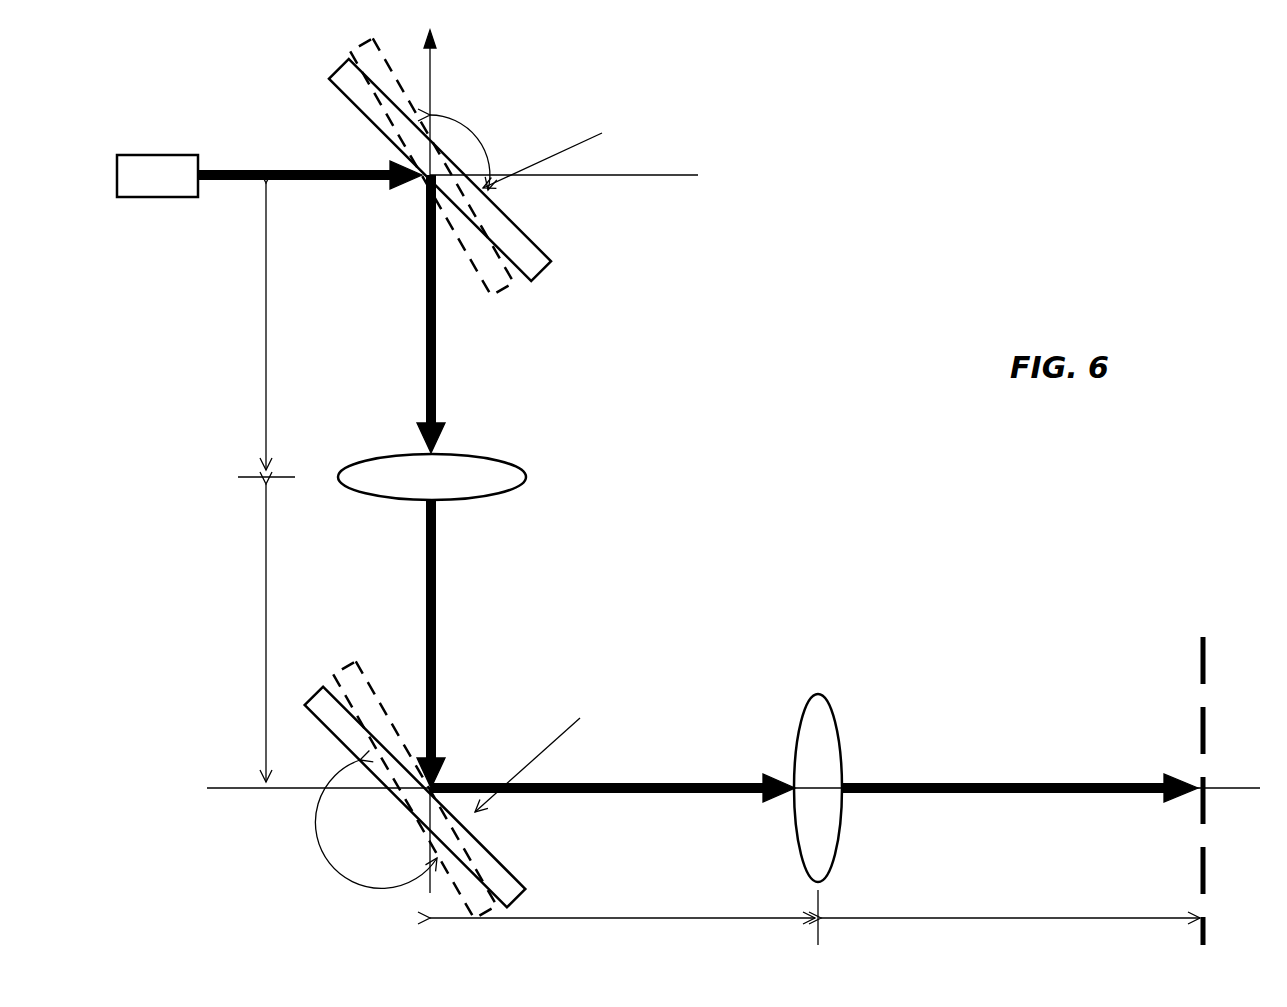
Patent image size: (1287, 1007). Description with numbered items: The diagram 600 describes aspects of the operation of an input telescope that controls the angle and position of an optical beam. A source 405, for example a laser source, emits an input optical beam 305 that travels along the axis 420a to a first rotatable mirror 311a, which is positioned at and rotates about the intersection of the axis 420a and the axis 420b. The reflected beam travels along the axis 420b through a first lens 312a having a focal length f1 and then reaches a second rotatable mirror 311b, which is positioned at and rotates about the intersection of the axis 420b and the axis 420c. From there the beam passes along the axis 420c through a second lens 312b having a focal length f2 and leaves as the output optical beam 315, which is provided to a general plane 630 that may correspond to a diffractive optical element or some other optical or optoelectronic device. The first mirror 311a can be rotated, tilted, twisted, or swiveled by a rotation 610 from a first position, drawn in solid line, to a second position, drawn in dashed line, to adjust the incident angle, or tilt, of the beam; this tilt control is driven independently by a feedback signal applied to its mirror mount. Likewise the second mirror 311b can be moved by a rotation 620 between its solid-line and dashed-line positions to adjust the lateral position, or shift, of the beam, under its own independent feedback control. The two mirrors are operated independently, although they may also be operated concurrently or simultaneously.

The diagram 600 is at (1160, 108).
The source 405 is at (178, 153).
The input optical beam 305 is at (273, 170).
The axis 420b is at (430, 63).
The axis 420a is at (687, 177).
The axis 420c is at (212, 790).
The rotation 610 is at (485, 128).
The first rotatable mirror 311a is at (545, 258).
The first lens 312a is at (527, 473).
The second rotatable mirror 311b is at (498, 867).
The rotation 620 is at (377, 850).
The second lens 312b is at (818, 694).
The output optical beam 315 is at (1130, 783).
The general plane 630 is at (1203, 650).